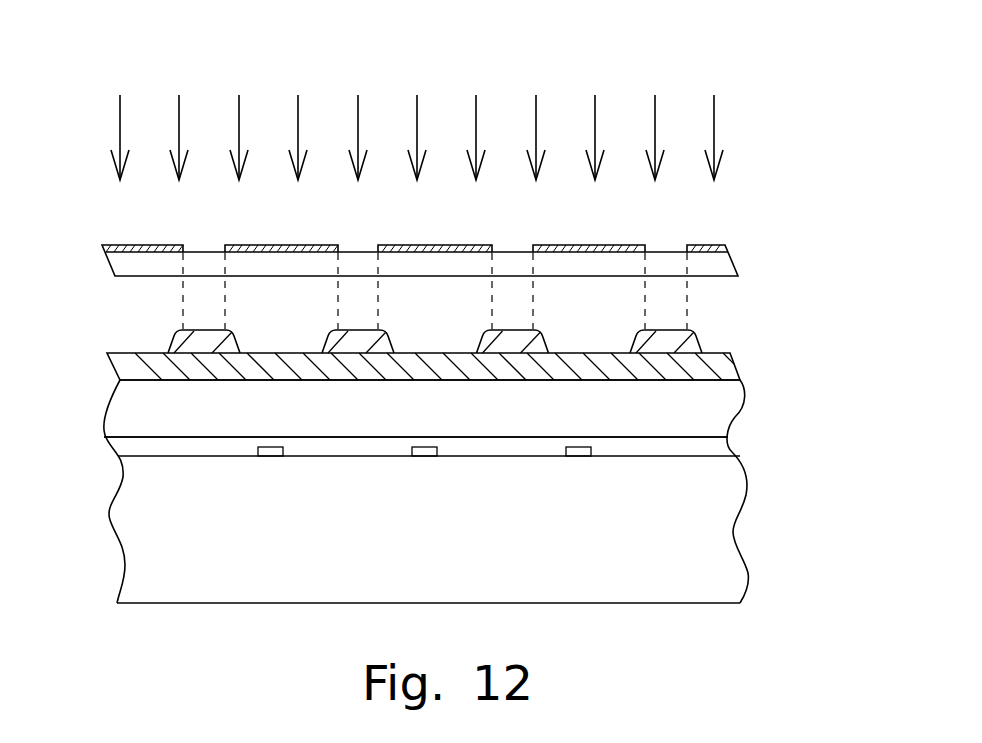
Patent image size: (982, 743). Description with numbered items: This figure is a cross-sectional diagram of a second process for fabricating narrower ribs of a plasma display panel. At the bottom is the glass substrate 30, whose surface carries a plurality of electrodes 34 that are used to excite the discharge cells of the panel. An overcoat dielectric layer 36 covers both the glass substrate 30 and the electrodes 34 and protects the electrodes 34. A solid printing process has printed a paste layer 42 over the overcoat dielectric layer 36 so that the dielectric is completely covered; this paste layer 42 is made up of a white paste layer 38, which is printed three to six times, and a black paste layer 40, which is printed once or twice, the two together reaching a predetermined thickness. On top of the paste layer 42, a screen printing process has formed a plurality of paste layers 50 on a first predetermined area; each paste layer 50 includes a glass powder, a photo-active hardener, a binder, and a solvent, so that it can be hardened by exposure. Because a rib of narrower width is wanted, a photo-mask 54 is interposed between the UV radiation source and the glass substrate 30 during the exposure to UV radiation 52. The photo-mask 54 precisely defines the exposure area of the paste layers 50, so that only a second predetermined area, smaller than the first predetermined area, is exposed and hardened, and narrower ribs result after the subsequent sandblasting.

The glass substrate 30 is at (435, 563).
The electrodes 34 is at (268, 458).
The overcoat dielectric layer 36 is at (715, 447).
The white paste layer 38 is at (715, 400).
The black paste layer 40 is at (720, 365).
The paste layer 42 is at (732, 353).
The paste layers 50 is at (175, 336).
The UV radiation 52 is at (417, 137).
The photo-mask 54 is at (715, 260).